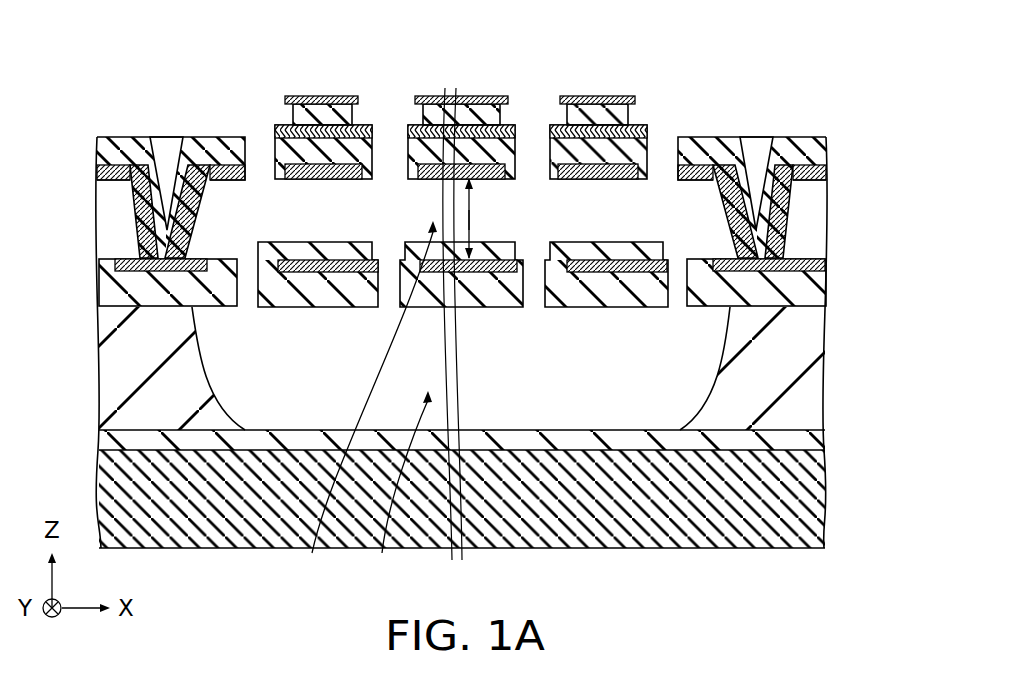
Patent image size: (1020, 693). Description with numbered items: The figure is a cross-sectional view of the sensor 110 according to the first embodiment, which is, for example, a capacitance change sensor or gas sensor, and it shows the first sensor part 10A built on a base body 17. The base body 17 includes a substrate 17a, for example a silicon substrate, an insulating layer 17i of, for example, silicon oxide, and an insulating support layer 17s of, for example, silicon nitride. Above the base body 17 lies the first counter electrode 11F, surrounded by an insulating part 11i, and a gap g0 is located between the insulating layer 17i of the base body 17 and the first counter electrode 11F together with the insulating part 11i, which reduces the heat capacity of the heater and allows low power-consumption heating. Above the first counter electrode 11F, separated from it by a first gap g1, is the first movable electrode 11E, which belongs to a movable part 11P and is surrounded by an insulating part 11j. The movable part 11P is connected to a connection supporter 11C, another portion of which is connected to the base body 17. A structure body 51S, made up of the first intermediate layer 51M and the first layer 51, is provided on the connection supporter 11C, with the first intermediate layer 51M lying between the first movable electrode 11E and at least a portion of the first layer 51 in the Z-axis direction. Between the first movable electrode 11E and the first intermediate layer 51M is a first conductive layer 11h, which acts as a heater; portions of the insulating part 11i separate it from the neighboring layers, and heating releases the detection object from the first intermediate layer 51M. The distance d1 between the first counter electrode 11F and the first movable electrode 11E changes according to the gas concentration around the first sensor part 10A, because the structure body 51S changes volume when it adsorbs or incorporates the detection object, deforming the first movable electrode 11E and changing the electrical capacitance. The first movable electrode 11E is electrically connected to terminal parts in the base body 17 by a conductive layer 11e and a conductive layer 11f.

The sensor 110 is at (474, 305).
The first sensor part 10A is at (460, 305).
The movable part 11P is at (462, 113).
The connection supporter 11C is at (277, 130).
The first conductive layer 11h is at (427, 138).
The insulating part 11j is at (510, 175).
The first movable electrode 11E is at (472, 178).
The distance d1 is at (472, 218).
The conductive layer 11e is at (135, 262).
The conductive layer 11f is at (793, 264).
The first counter electrode 11F is at (480, 272).
The insulating part 11i is at (505, 255).
The first layer 51 is at (345, 100).
The first intermediate layer 51M is at (320, 103).
The structure body 51S is at (420, 85).
The first gap g1 is at (368, 406).
The gap g0 is at (400, 491).
The base body 17 is at (478, 367).
The substrate 17a is at (505, 500).
The insulating layer 17i is at (615, 438).
The insulating support layer 17s is at (767, 372).